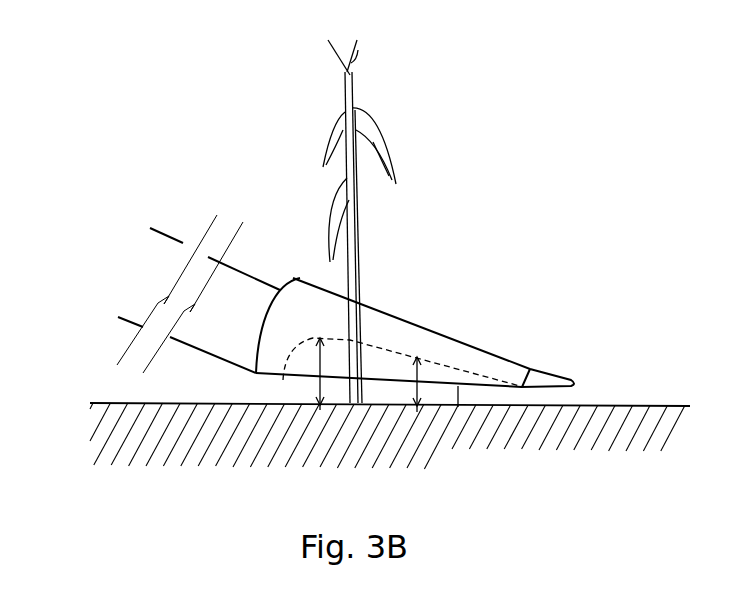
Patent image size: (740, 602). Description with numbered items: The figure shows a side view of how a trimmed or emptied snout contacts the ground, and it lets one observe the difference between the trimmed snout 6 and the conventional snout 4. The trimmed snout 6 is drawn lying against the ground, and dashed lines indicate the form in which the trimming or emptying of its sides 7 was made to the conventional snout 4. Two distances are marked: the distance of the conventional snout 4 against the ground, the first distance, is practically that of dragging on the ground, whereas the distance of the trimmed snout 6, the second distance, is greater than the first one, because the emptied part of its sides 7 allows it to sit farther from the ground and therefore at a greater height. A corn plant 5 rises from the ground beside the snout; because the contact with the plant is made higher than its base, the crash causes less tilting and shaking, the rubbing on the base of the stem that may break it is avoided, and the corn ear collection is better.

The conventional snout 4 is at (458, 408).
The plant 5 is at (373, 118).
The trimmed snout 6 is at (393, 315).
The trimming or emptying of the sides 7 is at (445, 367).